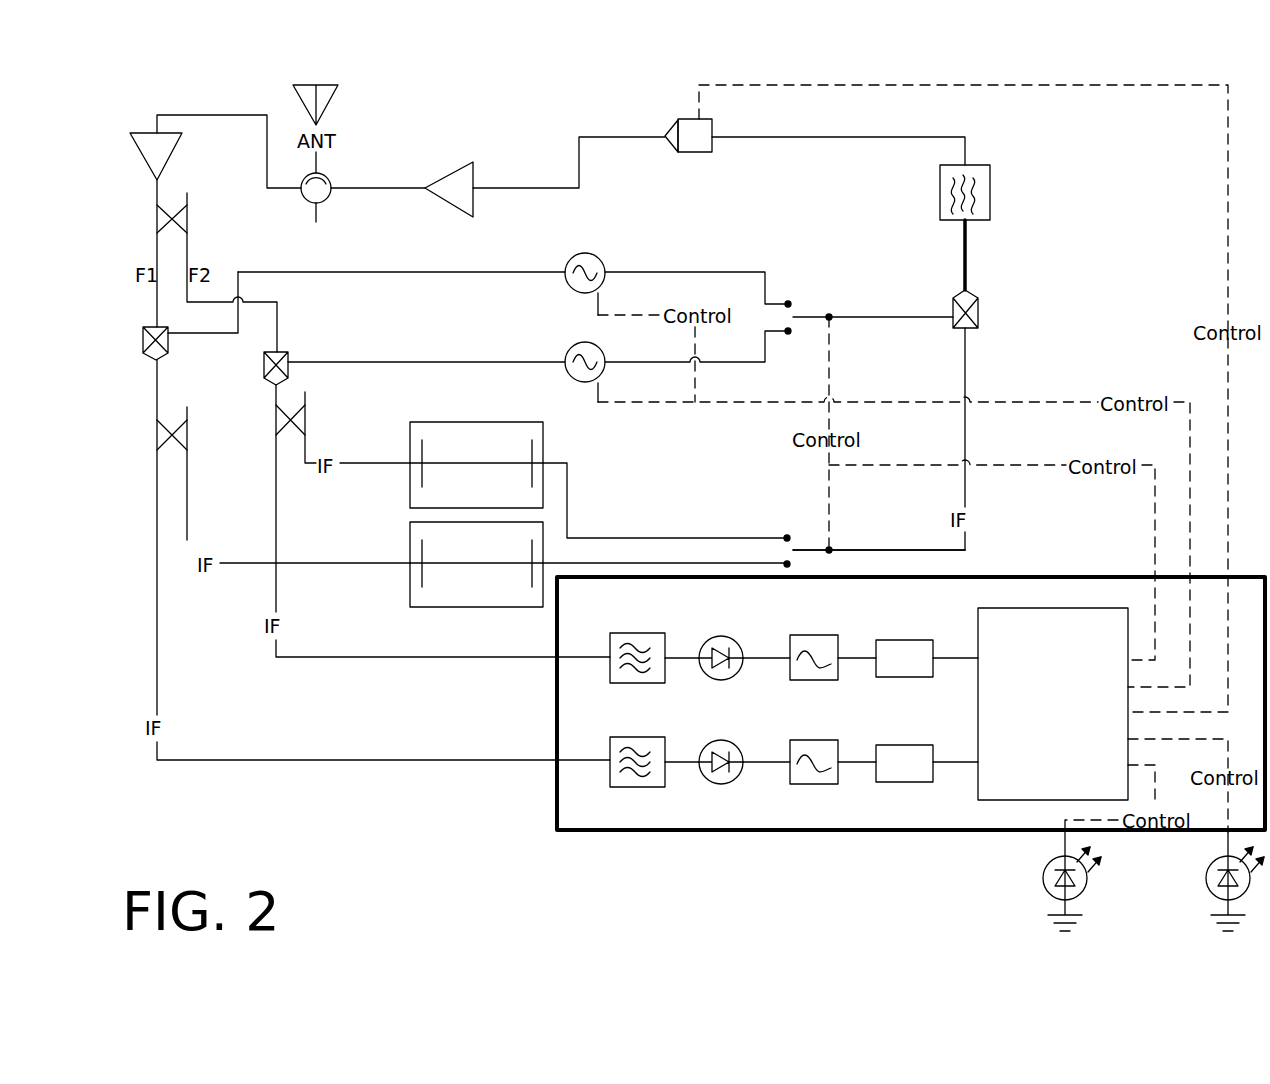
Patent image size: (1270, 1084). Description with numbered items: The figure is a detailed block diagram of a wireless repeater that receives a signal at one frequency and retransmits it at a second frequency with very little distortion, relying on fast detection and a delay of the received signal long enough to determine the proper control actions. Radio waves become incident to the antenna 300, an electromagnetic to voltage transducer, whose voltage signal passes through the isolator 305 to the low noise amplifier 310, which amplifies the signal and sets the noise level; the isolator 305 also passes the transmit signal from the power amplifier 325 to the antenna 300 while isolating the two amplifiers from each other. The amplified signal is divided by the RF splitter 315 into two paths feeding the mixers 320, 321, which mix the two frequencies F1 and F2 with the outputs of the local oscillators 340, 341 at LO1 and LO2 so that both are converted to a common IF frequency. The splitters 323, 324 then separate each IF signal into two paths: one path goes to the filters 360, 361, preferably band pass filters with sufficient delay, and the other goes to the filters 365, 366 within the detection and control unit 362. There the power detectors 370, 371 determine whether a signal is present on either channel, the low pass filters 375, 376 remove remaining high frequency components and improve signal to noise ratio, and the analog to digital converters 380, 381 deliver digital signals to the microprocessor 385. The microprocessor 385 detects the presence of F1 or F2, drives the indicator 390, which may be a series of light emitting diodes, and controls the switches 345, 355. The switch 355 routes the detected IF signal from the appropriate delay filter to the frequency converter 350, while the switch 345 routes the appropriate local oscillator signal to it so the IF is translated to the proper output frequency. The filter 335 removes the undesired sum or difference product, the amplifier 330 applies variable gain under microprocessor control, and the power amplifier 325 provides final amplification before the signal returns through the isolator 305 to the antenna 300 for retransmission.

The antenna 300 is at (333, 97).
The isolator 305 is at (333, 182).
The low noise amplifier 310 is at (185, 158).
The RF splitter 315 is at (187, 222).
The mixer 320 is at (160, 360).
The mixer 321 is at (280, 352).
The splitter 323 is at (187, 437).
The splitter 324 is at (305, 420).
The power amplifier 325 is at (448, 172).
The amplifier 330 is at (698, 153).
The filter 335 is at (990, 176).
The local oscillator 340 is at (598, 253).
The local oscillator 341 is at (568, 348).
The switch 345 is at (812, 317).
The frequency converter 350 is at (980, 318).
The switch 355 is at (806, 535).
The filter 360 is at (525, 420).
The filter 361 is at (432, 610).
The detection and control unit 362 is at (556, 810).
The filter 365 is at (645, 633).
The filter 366 is at (645, 737).
The power detector 370 is at (732, 681).
The power detector 371 is at (715, 787).
The low pass filter 375 is at (813, 681).
The low pass filter 376 is at (813, 786).
The analog to digital converter 380 is at (905, 640).
The analog to digital converter 381 is at (905, 745).
The microprocessor 385 is at (1053, 607).
The indicator 390 is at (1043, 880).